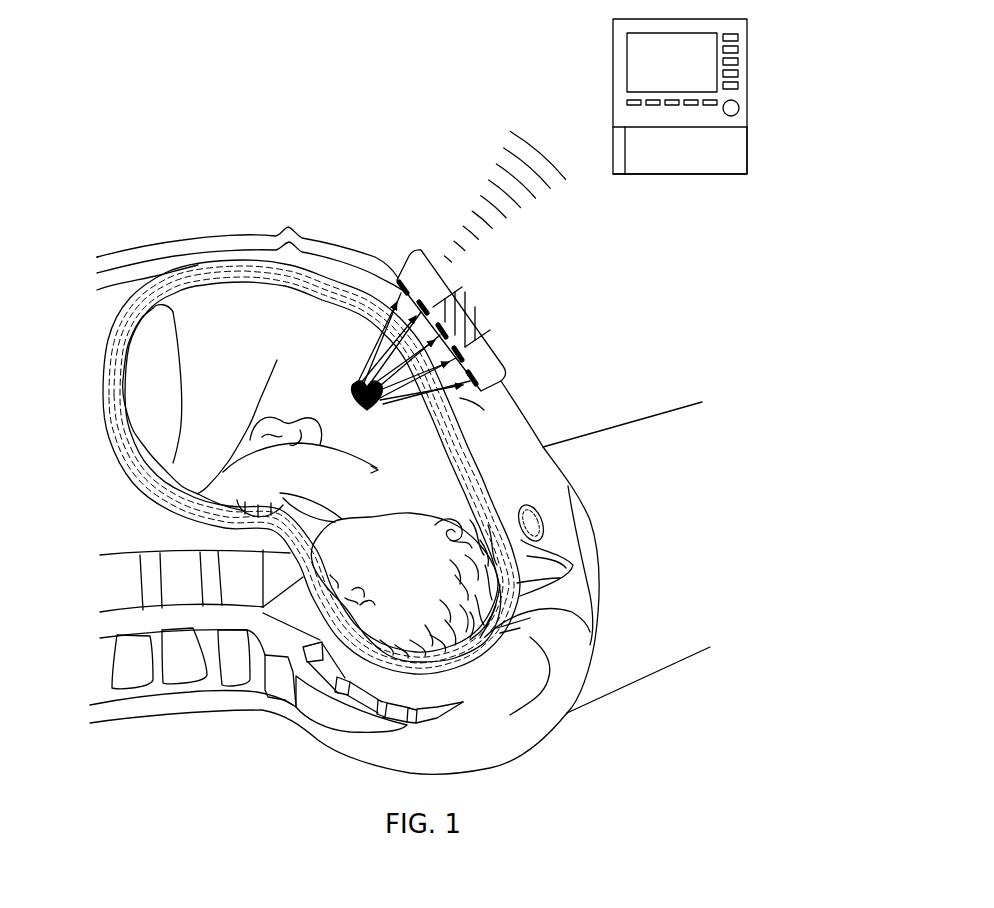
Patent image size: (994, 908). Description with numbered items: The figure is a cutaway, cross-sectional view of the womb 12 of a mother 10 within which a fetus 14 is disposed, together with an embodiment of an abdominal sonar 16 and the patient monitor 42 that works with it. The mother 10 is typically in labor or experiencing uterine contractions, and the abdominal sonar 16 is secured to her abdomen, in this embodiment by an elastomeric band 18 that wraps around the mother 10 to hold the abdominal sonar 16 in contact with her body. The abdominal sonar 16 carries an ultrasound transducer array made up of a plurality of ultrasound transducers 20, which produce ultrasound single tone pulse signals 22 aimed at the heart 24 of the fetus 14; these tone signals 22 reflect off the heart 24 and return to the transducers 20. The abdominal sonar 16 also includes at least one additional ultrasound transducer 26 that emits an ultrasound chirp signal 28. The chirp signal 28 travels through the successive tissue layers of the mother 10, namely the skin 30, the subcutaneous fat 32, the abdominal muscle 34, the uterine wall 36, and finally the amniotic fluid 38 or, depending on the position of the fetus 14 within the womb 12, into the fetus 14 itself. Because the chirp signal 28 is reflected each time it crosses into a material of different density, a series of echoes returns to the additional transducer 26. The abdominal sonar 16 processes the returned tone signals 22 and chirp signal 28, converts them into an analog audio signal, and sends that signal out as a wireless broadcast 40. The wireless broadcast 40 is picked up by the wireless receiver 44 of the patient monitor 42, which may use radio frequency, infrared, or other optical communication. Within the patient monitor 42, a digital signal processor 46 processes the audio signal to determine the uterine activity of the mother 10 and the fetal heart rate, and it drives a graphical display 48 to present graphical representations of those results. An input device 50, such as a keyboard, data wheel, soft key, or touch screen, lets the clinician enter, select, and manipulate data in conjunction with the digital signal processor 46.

The mother 10 is at (261, 184).
The womb 12 is at (192, 286).
The fetus 14 is at (257, 345).
The abdominal sonar 16 is at (506, 355).
The elastomeric band 18 is at (494, 319).
The ultrasound transducers 20 is at (405, 287).
The ultrasound single tone pulse signals 22 is at (364, 349).
The heart 24 is at (363, 408).
The additional ultrasound transducer 26 is at (460, 319).
The ultrasound chirp signal 28 is at (462, 400).
The skin 30 is at (386, 268).
The subcutaneous fat 32 is at (366, 272).
The abdominal muscle 34 is at (343, 283).
The uterine wall 36 is at (323, 291).
The amniotic fluid 38 is at (292, 285).
The wireless broadcast 40 is at (542, 233).
The patient monitor 42 is at (699, 127).
The wireless receiver 44 is at (625, 178).
The digital signal processor 46 is at (667, 156).
The graphical display 48 is at (657, 71).
The input device 50 is at (749, 62).